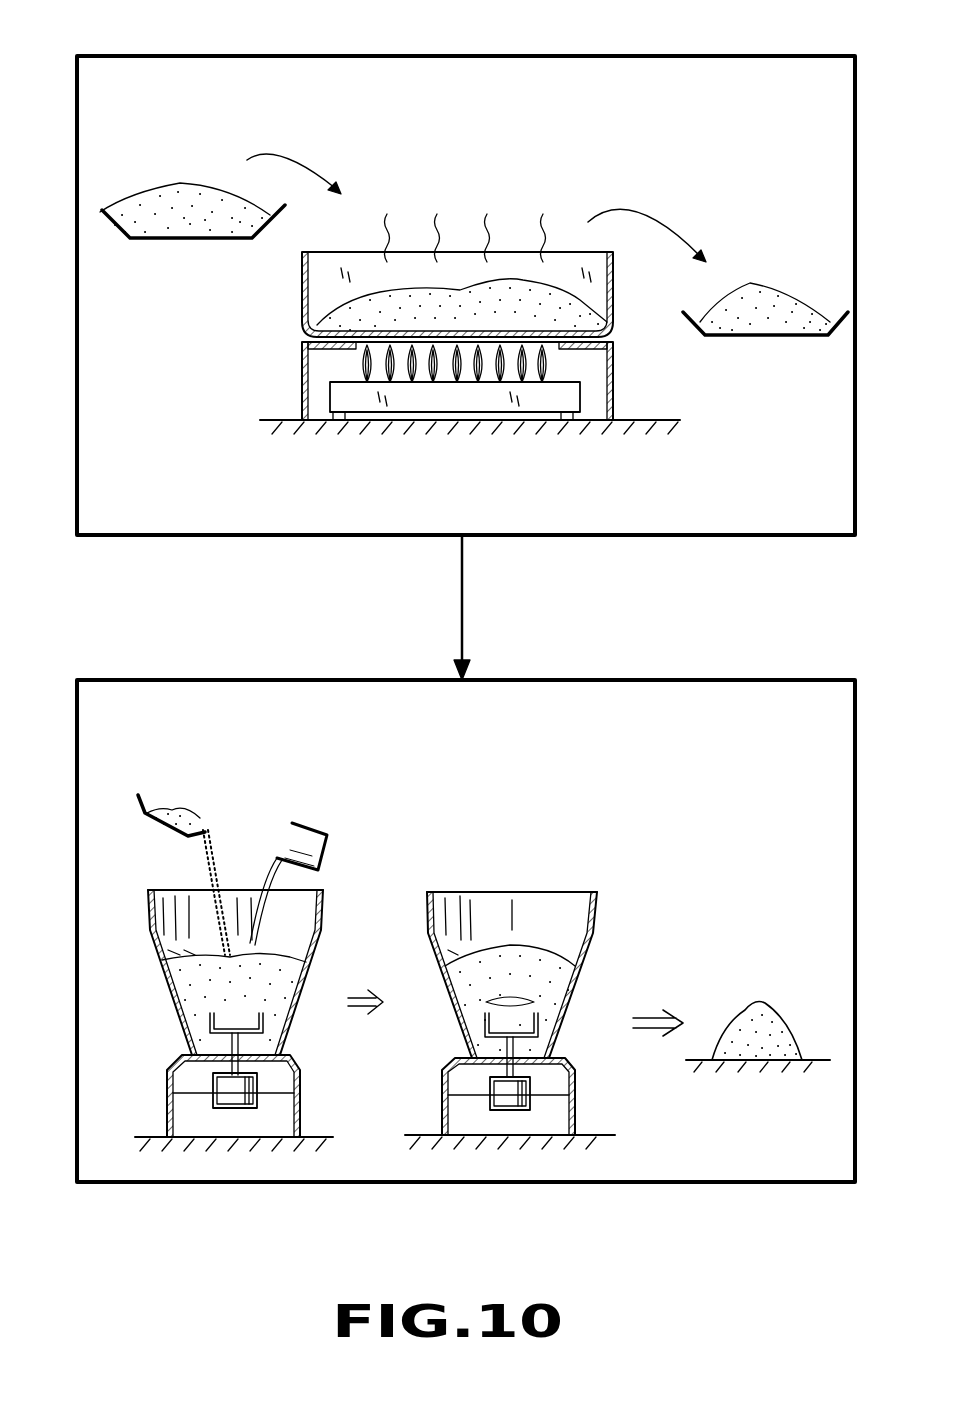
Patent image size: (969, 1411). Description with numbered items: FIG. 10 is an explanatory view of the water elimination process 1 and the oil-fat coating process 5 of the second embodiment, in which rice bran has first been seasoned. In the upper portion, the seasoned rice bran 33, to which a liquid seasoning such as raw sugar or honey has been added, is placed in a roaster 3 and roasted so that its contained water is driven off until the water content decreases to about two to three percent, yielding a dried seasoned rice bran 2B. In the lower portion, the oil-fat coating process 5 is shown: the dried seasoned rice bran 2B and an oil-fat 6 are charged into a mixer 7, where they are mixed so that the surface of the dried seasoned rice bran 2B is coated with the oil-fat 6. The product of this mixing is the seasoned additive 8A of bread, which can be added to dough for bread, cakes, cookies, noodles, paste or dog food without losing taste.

The water elimination process 1 is at (752, 57).
The seasoned rice bran 33 is at (188, 183).
The roaster 3 is at (302, 298).
The dried seasoned rice bran 2B is at (770, 285).
The oil-fat coating process 5 is at (745, 672).
The oil-fat 6 is at (283, 855).
The mixer 7 is at (312, 962).
The seasoned additive of bread 8A is at (773, 1010).